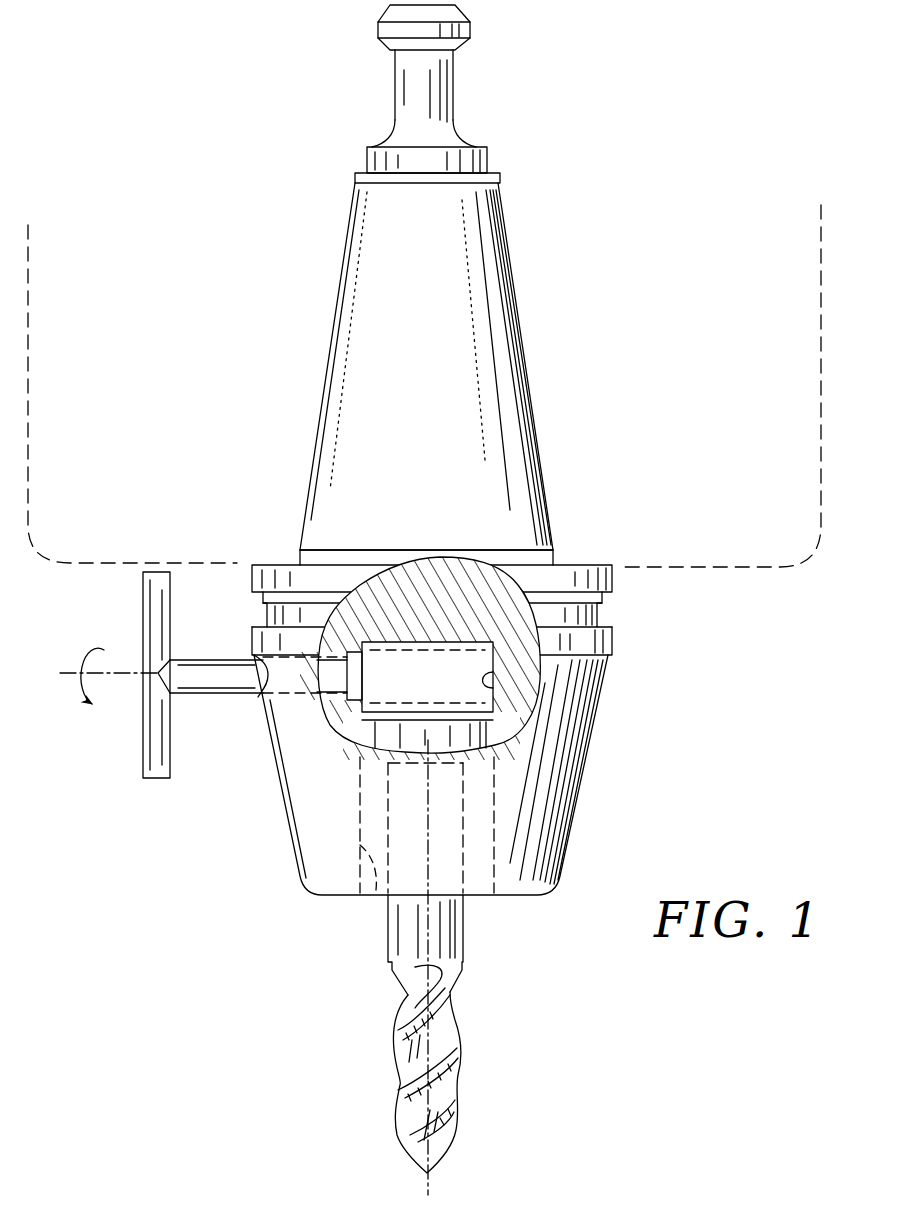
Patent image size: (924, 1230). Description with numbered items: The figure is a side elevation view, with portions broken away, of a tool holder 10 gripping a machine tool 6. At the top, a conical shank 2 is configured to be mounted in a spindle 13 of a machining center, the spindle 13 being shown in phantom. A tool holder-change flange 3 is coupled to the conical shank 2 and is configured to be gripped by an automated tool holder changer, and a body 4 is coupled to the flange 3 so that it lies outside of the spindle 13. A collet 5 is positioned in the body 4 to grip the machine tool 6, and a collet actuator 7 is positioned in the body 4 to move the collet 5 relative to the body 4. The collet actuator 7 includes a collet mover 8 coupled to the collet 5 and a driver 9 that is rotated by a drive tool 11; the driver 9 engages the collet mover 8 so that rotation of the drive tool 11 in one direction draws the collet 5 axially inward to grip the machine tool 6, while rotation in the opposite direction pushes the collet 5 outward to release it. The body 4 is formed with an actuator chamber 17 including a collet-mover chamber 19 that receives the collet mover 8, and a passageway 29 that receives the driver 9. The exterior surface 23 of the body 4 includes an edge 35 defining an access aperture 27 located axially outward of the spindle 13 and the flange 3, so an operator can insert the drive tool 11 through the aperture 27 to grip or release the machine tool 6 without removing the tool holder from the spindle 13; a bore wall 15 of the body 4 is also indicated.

The conical shank 2 is at (450, 400).
The tool holder-change flange 3 is at (582, 643).
The body 4 is at (592, 768).
The collet 5 is at (500, 818).
The machine tool 6 is at (462, 947).
The collet actuator 7 is at (512, 678).
The collet mover 8 is at (482, 655).
The driver 9 is at (415, 648).
The tool holder assembly 10 is at (252, 833).
The drive tool 11 is at (222, 683).
The spindle 13 is at (713, 578).
The bore wall 15 is at (376, 897).
The actuator chamber 17 is at (352, 745).
The collet-mover chamber 19 is at (495, 690).
The exterior surface 23 is at (298, 855).
The access aperture 27 is at (246, 656).
The passageway 29 is at (345, 690).
The edge 35 is at (262, 698).